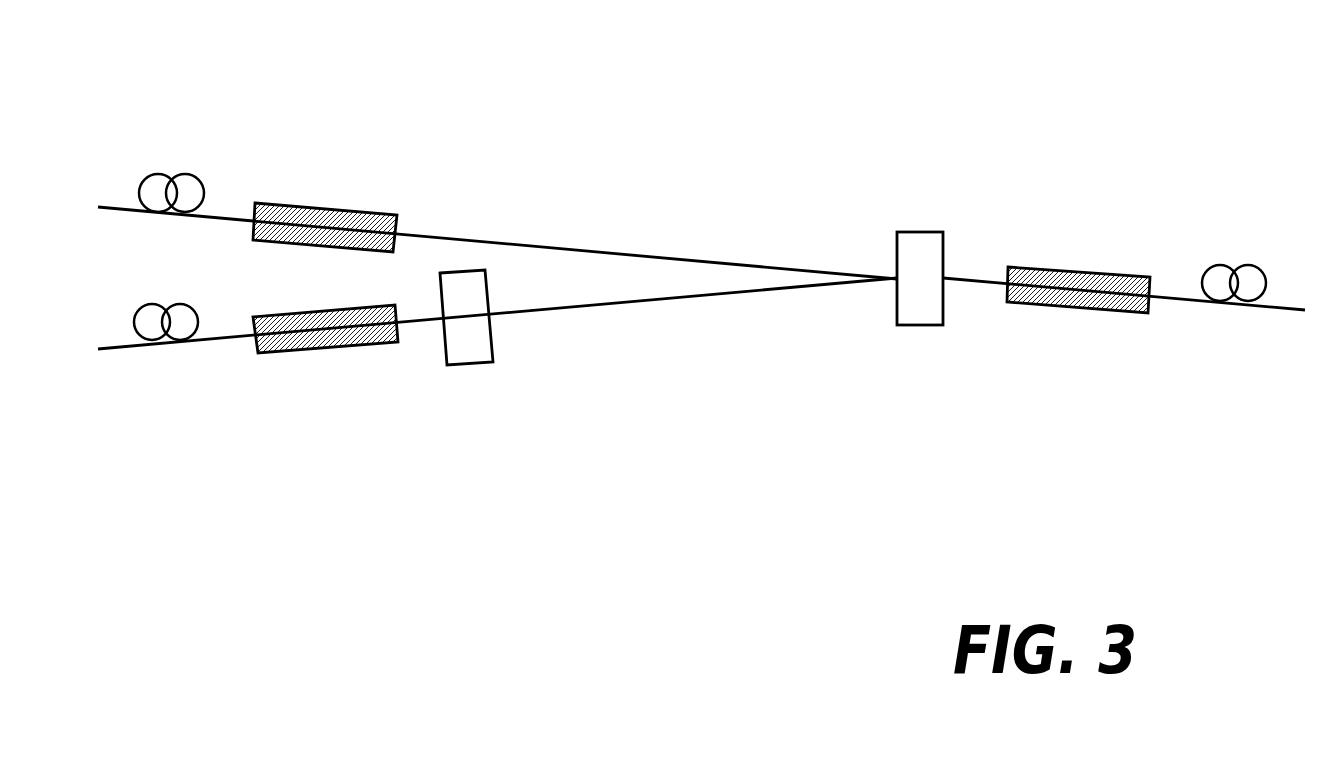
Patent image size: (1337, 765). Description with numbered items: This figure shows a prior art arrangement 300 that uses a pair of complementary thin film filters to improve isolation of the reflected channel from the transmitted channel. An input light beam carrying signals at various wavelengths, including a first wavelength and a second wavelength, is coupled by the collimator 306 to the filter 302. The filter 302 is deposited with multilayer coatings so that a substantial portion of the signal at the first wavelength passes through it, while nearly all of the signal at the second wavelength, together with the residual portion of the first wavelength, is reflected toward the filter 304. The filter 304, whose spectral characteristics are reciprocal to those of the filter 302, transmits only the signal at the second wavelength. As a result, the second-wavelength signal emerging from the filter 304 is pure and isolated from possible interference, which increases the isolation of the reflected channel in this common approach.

The prior art optical add/drop module 300 is at (692, 249).
The filter 302 is at (917, 300).
The filter 304 is at (470, 342).
The collimator 306 is at (325, 184).